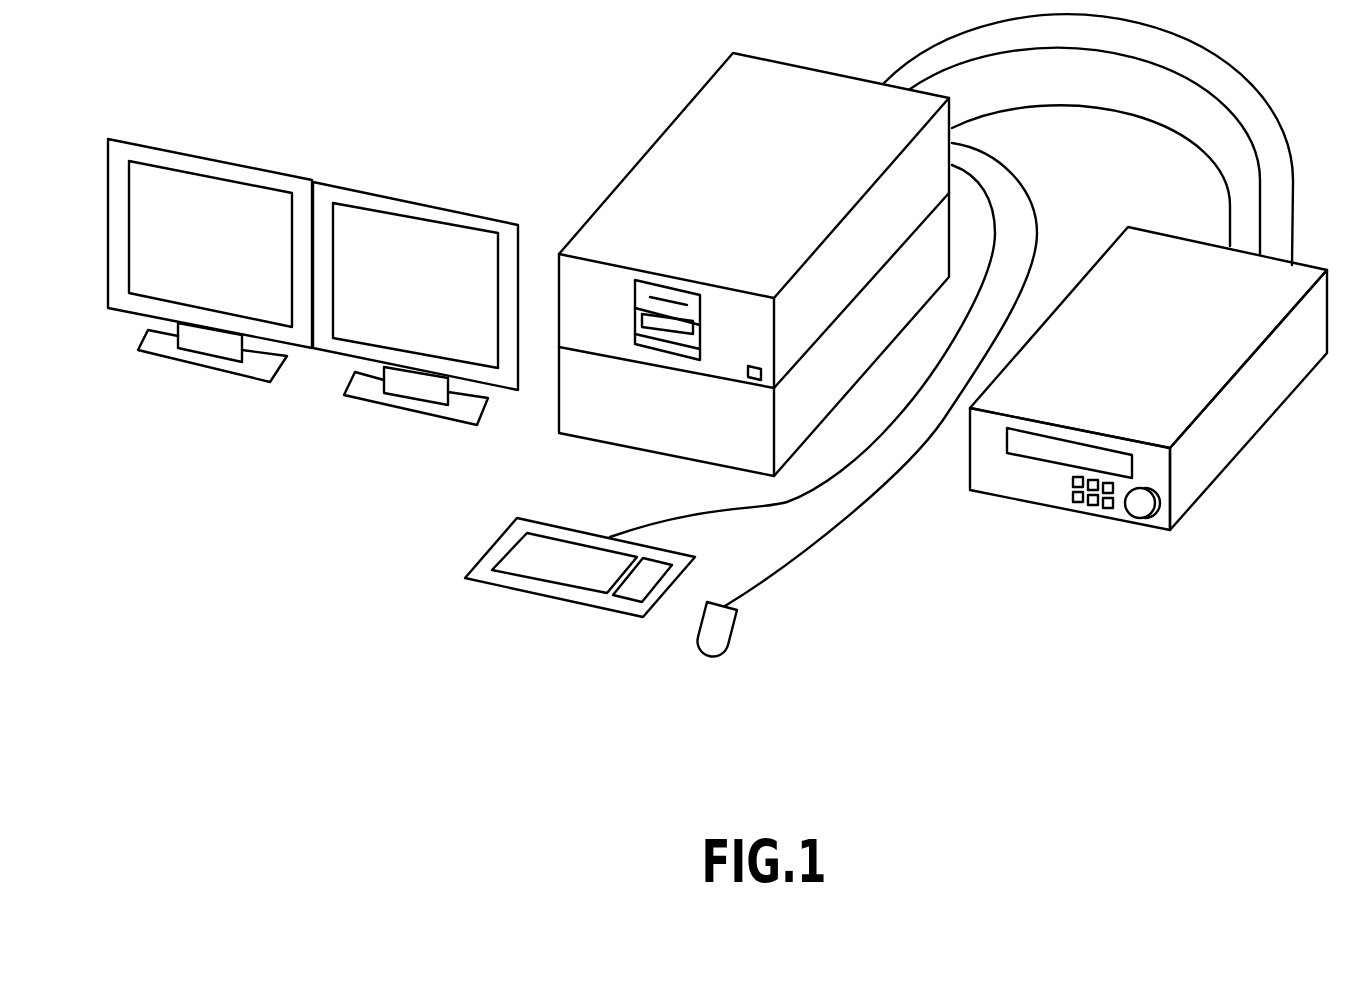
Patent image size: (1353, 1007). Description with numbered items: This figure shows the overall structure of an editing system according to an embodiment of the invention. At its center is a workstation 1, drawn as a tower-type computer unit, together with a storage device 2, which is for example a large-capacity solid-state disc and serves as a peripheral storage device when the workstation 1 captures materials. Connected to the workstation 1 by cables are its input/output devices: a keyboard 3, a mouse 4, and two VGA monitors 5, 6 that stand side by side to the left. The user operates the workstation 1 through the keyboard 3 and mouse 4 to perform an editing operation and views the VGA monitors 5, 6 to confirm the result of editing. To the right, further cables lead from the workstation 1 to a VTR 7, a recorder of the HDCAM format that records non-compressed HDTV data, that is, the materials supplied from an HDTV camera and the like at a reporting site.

The workstation 1 is at (732, 265).
The storage device 2 is at (583, 440).
The keyboard 3 is at (523, 592).
The mouse 4 is at (700, 630).
The VGA monitor 5 is at (410, 252).
The VGA monitor 6 is at (203, 207).
The VTR 7 is at (1020, 500).